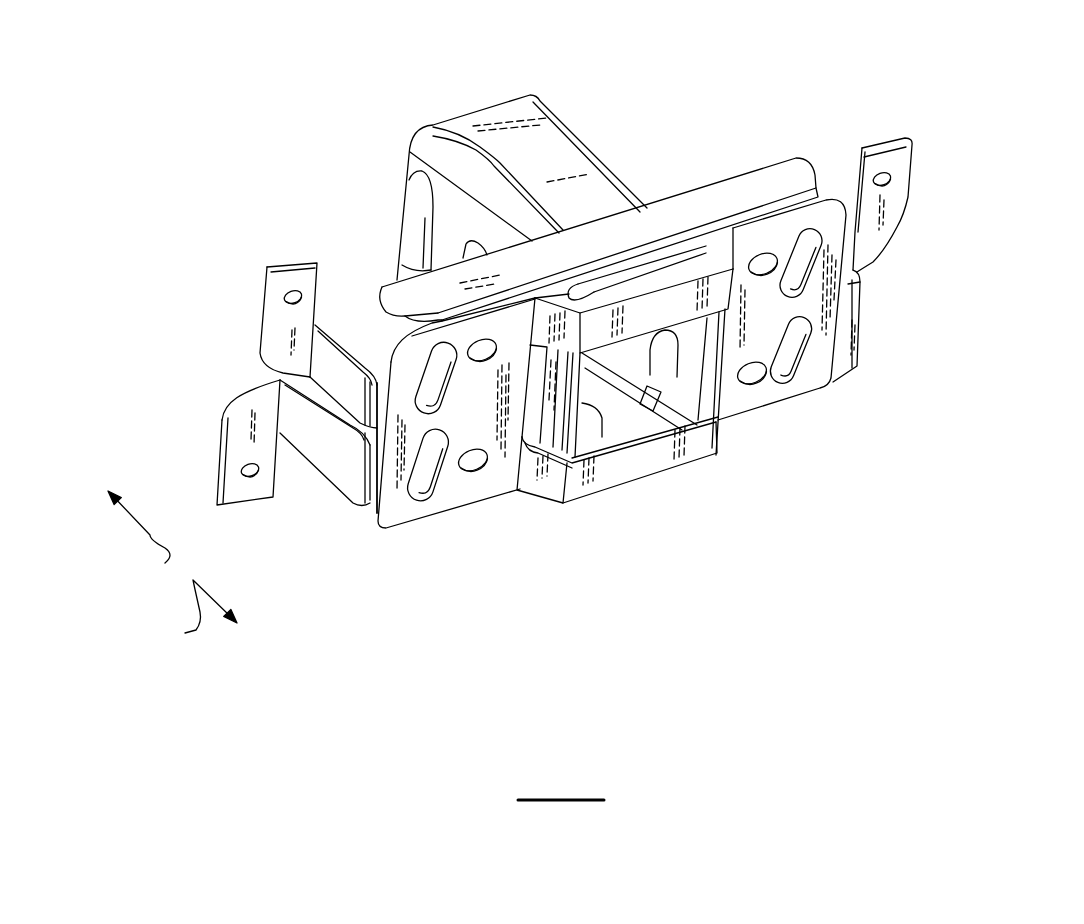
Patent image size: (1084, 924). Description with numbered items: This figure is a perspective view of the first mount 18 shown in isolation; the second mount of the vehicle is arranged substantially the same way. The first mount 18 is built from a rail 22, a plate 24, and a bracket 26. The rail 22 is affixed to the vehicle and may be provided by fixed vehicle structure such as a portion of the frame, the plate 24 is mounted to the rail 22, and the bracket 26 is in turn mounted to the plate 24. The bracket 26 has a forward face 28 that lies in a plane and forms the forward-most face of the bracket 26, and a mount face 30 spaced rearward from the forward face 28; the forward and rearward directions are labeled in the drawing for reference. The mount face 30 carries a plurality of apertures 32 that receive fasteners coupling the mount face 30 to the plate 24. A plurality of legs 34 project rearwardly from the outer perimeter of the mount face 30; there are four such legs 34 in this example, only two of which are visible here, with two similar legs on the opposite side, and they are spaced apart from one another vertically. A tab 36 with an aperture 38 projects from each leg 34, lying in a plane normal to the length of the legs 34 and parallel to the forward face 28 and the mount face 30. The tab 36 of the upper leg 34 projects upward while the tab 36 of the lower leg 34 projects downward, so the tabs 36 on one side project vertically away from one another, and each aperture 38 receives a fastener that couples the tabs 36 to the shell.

The first mount 18 is at (606, 114).
The rail 22 is at (520, 137).
The plate 24 is at (747, 190).
The bracket 26 is at (837, 200).
The forward face 28 is at (676, 308).
The mount face 30 is at (485, 480).
The apertures 32 is at (475, 363).
The legs 34 is at (340, 377).
The tab 36 is at (273, 343).
The aperture 38 is at (290, 297).